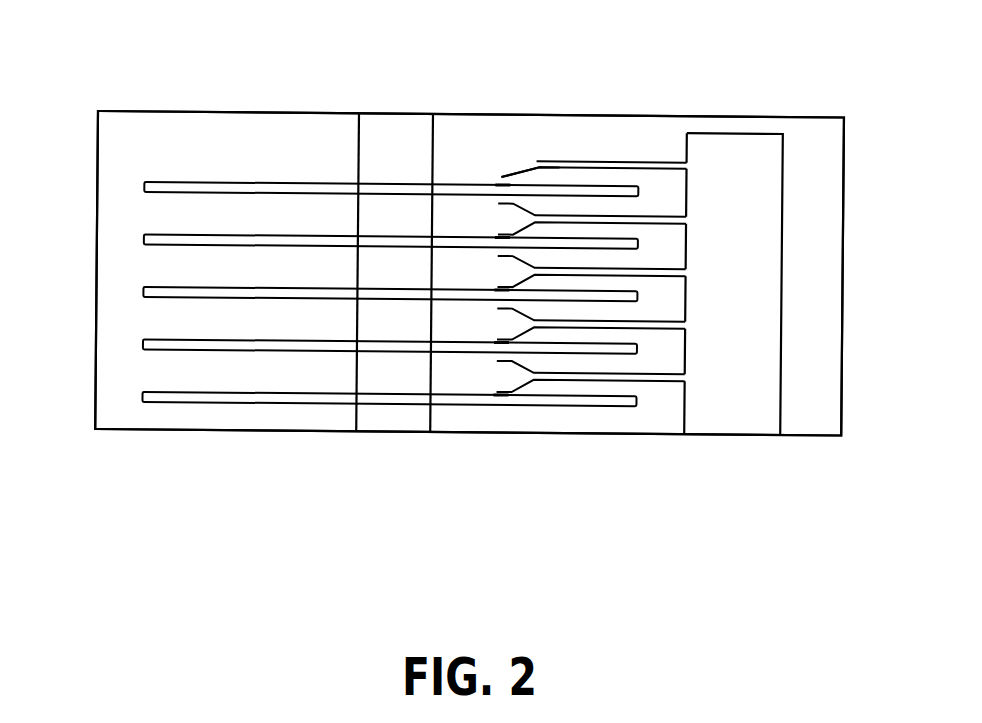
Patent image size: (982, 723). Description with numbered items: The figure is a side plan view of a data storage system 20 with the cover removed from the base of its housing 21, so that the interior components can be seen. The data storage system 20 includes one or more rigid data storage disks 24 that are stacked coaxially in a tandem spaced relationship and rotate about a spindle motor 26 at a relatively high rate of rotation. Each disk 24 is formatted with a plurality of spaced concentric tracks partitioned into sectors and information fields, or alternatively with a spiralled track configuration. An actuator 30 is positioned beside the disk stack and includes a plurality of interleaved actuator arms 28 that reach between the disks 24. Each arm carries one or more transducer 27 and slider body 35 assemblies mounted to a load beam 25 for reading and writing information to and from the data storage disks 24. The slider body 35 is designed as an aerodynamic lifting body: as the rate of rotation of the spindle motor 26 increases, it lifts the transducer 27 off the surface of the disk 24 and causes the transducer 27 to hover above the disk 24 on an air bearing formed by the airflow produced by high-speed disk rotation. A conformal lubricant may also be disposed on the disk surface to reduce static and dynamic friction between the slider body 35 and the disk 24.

The data storage system 20 is at (750, 77).
The housing 21 is at (843, 318).
The rigid data storage disks 24 is at (145, 183).
The load beam 25 is at (525, 170).
The spindle motor 26 is at (385, 432).
The transducer 27 is at (497, 187).
The actuator arms 28 is at (590, 162).
The actuator 30 is at (731, 408).
The slider body 35 is at (507, 177).